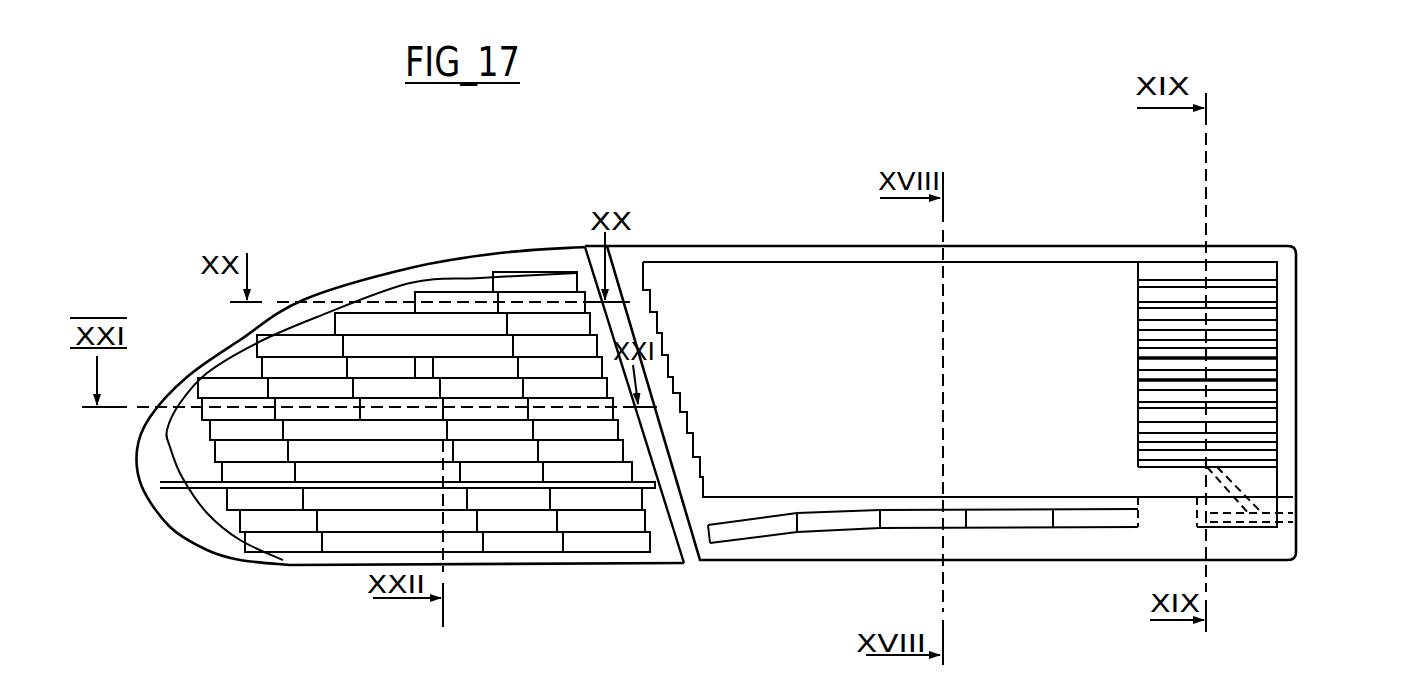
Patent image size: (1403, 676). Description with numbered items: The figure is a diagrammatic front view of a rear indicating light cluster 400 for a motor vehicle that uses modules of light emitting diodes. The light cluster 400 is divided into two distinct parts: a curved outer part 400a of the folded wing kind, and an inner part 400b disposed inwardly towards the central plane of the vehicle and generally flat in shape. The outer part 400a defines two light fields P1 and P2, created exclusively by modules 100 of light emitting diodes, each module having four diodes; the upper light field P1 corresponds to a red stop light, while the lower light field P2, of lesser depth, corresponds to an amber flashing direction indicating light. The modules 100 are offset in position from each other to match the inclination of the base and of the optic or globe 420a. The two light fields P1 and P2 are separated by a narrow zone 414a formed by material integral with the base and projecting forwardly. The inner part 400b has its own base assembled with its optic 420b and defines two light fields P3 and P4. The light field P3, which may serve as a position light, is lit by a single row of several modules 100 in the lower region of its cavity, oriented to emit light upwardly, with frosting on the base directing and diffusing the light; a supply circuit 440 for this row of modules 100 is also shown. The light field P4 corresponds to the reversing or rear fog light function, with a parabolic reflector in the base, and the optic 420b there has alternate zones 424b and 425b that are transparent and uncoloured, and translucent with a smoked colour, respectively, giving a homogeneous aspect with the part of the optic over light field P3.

The light cluster 400 is at (780, 194).
The outer part 400a is at (307, 272).
The inner part 400b is at (1186, 218).
The modules of light emitting diodes 100 is at (310, 472).
The narrow zone 414a is at (325, 485).
The optic 420a is at (233, 540).
The optic 420b is at (858, 546).
The transparent uncoloured zones 424b is at (1260, 293).
The translucent smoked zones 425b is at (1260, 358).
The supply circuit 440 is at (1155, 513).
The upper light field P1 is at (461, 355).
The lower light field P2 is at (509, 518).
The light field P3 is at (844, 371).
The light field P4 is at (1255, 327).